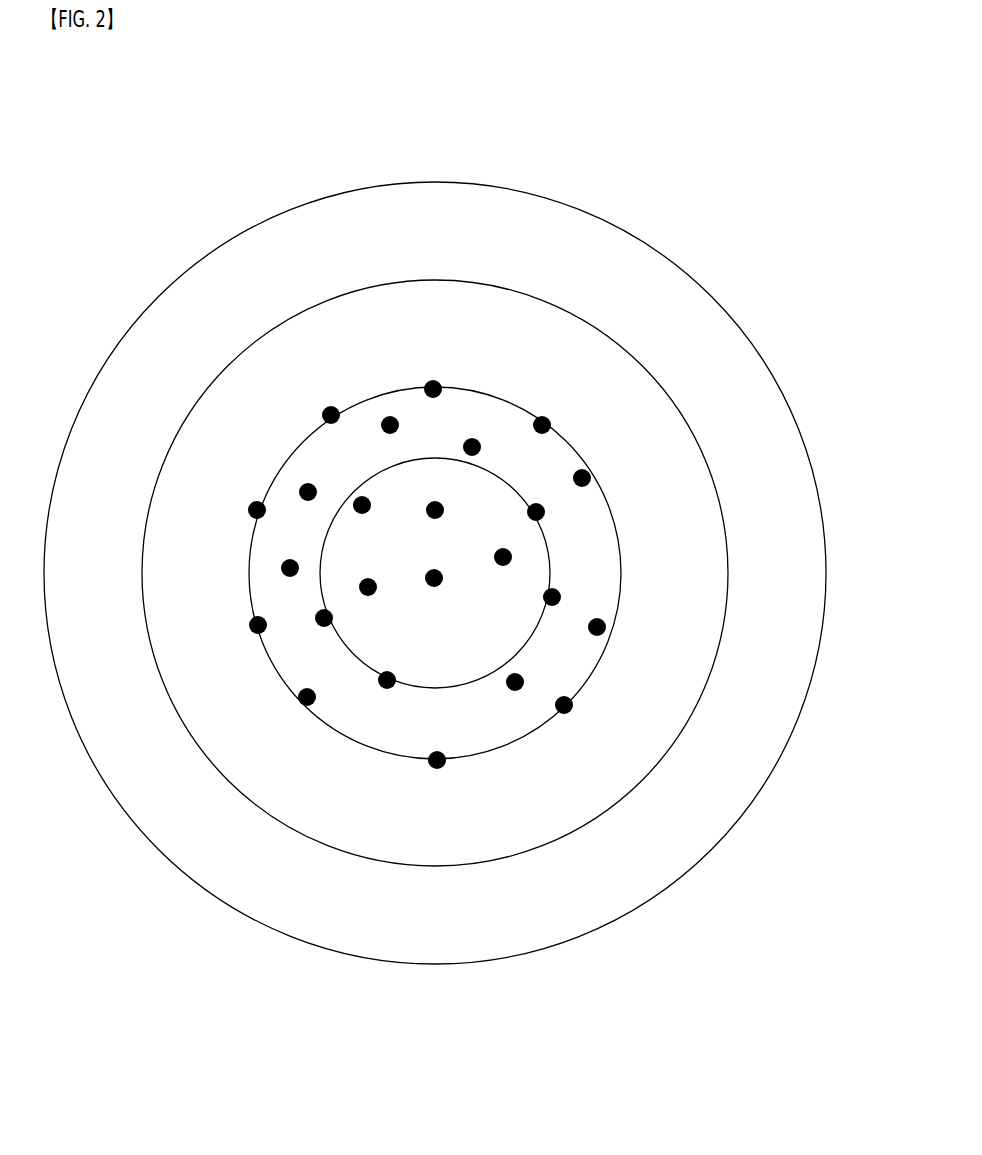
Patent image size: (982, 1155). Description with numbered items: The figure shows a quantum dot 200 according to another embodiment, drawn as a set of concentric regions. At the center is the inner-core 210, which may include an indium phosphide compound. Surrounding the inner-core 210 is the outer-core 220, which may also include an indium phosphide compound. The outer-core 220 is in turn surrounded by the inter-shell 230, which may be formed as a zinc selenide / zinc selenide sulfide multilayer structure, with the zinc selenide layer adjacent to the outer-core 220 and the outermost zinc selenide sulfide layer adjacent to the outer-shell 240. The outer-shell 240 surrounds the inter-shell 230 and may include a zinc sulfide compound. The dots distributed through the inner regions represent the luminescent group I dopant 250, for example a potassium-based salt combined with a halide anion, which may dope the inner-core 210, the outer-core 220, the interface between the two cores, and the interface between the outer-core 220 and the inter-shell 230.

The quantum dot 200 is at (456, 113).
The inner-core 210 is at (550, 547).
The outer-core 220 is at (622, 578).
The inter-shell 230 is at (658, 378).
The outer-shell 240 is at (753, 337).
The luminescent group I dopant 250 is at (550, 418).